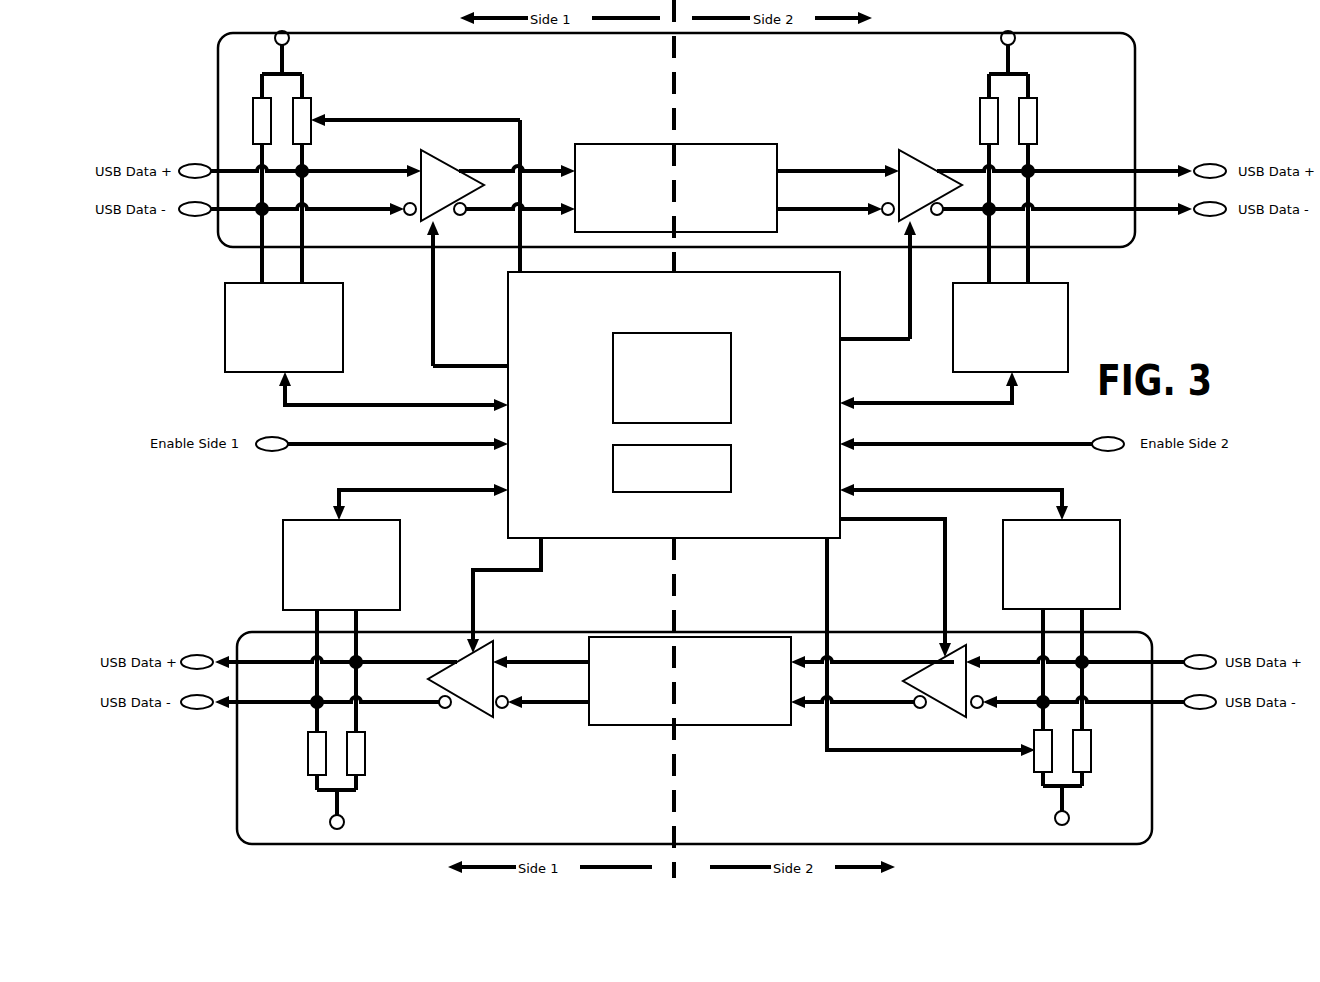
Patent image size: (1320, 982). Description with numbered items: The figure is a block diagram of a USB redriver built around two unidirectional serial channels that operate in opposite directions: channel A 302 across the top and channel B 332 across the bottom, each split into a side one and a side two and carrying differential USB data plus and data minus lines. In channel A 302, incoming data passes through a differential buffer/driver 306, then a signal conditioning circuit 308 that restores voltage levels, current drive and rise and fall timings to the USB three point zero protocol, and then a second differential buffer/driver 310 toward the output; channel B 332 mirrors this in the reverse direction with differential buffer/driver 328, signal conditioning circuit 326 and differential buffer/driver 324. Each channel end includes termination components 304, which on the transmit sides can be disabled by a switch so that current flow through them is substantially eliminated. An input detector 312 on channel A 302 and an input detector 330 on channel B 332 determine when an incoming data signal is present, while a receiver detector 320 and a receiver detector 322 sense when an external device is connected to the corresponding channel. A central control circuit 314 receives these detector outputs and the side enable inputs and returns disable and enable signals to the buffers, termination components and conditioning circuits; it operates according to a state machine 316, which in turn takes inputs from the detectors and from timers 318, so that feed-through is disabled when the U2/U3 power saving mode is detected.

The channel A 302 is at (907, 35).
The termination components 304 is at (314, 100).
The differential buffer/driver 306 is at (438, 162).
The signal conditioning circuit 308 is at (763, 152).
The differential buffer/driver 310 is at (917, 162).
The input detector 312 is at (346, 298).
The control circuit 314 is at (812, 280).
The state machine 316 is at (718, 344).
The timers 318 is at (722, 452).
The receiver detector 320 is at (1070, 293).
The receiver detector 322 is at (397, 550).
The differential buffer/driver 324 is at (492, 644).
The signal conditioning circuit 326 is at (737, 646).
The differential buffer/driver 328 is at (950, 625).
The input detector 330 is at (1090, 518).
The channel B 332 is at (1123, 634).